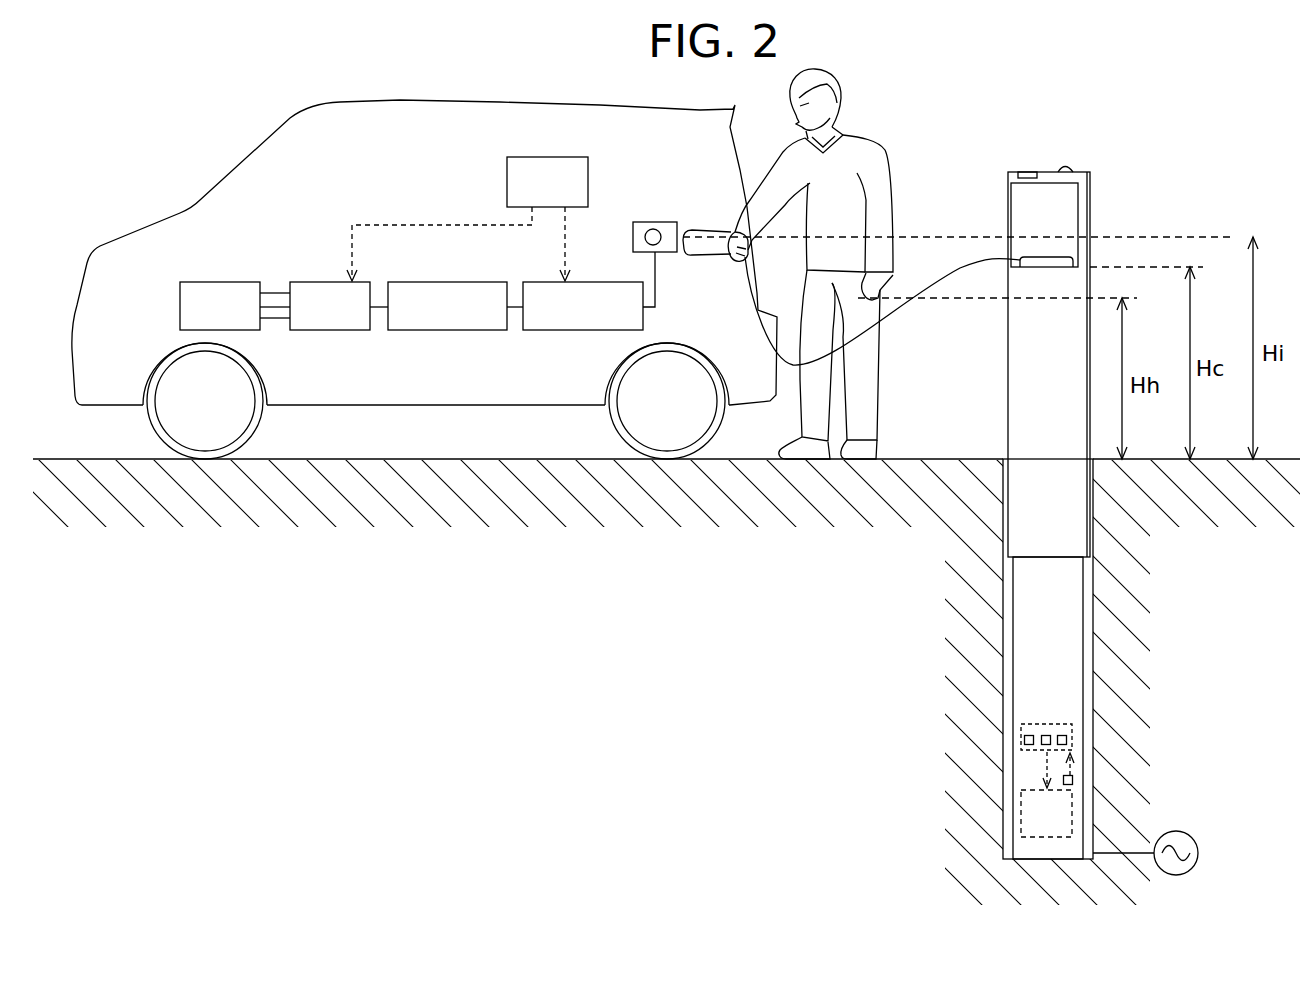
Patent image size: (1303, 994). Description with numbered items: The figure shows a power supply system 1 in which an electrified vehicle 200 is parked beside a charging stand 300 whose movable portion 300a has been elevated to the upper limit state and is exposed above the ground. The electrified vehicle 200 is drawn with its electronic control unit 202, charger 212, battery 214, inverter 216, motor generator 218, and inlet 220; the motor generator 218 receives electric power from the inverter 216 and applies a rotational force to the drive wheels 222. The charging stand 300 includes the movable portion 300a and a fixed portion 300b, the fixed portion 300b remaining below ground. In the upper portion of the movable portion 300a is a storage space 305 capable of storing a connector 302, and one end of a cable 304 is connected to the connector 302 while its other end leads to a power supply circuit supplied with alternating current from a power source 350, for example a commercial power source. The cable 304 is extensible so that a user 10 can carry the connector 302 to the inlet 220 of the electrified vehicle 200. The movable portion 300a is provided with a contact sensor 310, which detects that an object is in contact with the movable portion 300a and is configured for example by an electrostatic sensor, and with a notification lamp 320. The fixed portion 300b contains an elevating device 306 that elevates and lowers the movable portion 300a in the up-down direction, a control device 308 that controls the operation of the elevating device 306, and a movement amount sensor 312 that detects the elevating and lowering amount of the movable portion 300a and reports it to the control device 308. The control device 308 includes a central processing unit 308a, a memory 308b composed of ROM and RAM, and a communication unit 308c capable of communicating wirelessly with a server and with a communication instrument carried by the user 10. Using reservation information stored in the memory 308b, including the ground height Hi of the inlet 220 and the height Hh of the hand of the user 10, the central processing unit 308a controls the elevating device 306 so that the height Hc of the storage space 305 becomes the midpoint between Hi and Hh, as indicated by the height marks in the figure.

The power supply system 1 is at (120, 79).
The user 10 is at (838, 75).
The electrified vehicle 200 is at (590, 103).
The electronic control unit 202 is at (550, 150).
The charger 212 is at (597, 281).
The battery 214 is at (463, 281).
The inverter 216 is at (313, 281).
The motor generator 218 is at (217, 281).
The inlet 220 is at (643, 219).
The drive wheels 222 is at (262, 388).
The charging stand 300 is at (1046, 507).
The movable portion 300a is at (1081, 171).
The fixed portion 300b is at (1033, 862).
The connector 302 is at (708, 222).
The cable 304 is at (1040, 257).
The storage space 305 is at (1022, 270).
The elevating device 306 is at (1073, 808).
The control device 308 is at (1046, 741).
The central processing unit 308a is at (1063, 730).
The memory 308b is at (1030, 728).
The communication unit 308c is at (1025, 748).
The contact sensor 310 is at (1027, 170).
The movement amount sensor 312 is at (1074, 780).
The notification lamp 320 is at (1067, 163).
The power source 350 is at (1199, 855).